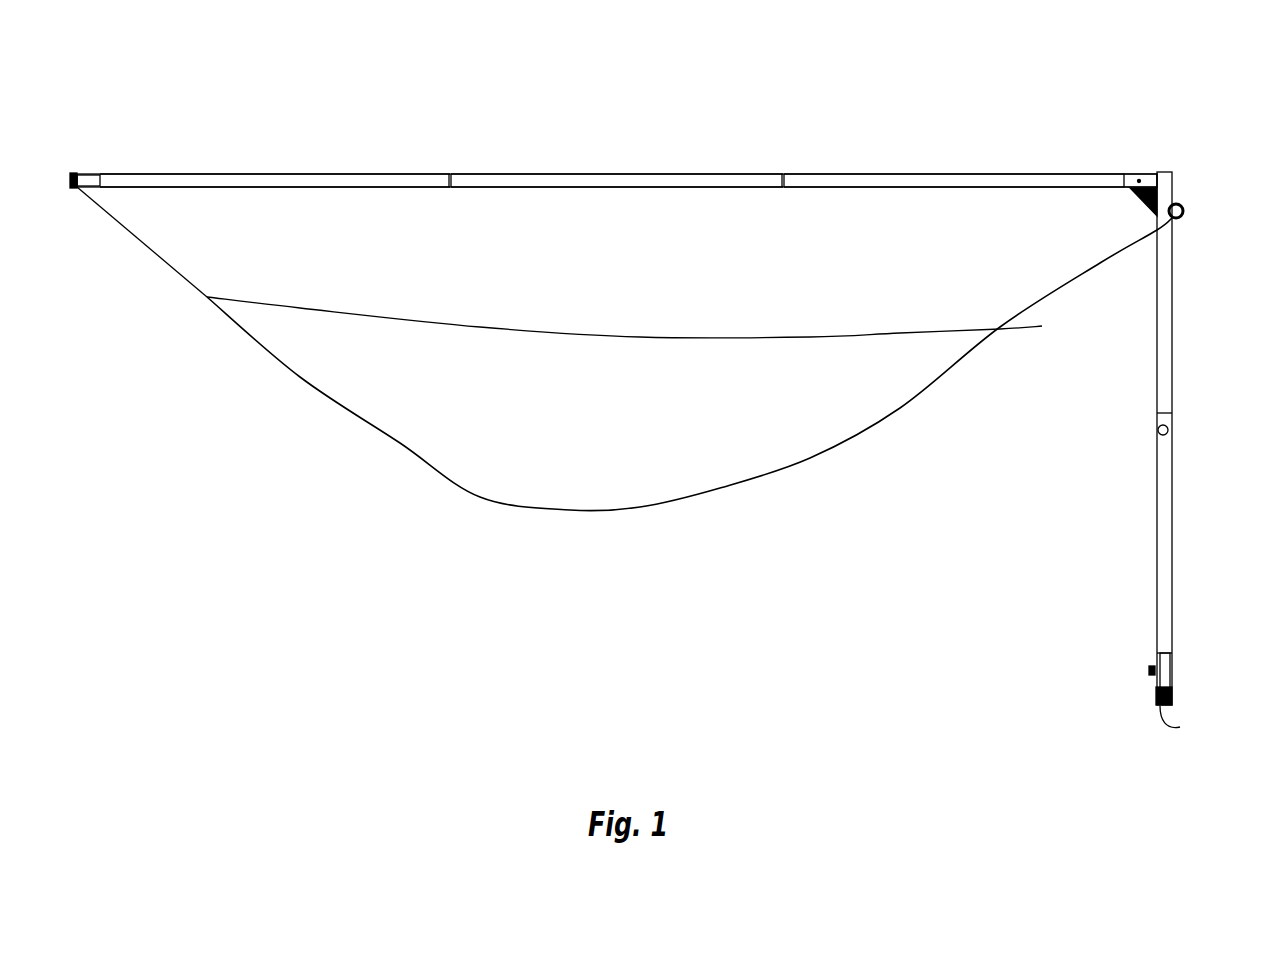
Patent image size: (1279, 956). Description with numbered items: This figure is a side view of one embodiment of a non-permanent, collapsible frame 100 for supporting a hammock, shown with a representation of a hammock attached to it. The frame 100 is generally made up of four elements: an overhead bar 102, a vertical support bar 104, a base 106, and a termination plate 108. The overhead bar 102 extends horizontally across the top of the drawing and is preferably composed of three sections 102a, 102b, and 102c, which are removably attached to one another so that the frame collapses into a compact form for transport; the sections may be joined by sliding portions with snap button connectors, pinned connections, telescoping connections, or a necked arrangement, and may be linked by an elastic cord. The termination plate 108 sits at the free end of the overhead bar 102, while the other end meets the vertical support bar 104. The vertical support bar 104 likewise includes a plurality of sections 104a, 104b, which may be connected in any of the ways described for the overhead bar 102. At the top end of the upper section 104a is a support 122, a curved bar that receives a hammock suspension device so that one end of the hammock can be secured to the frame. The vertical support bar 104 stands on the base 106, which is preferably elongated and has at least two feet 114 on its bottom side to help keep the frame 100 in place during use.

The non-permanent, collapsible frame 100 is at (1178, 102).
The overhead bar 102 is at (658, 174).
The first section of the overhead bar 102a is at (272, 174).
The second section of the overhead bar 102b is at (548, 174).
The third section of the overhead bar 102c is at (972, 174).
The vertical support bar 104 is at (1172, 362).
The first section of the vertical support bar 104a is at (1172, 306).
The second section of the vertical support bar 104b is at (1172, 522).
The base 106 is at (1173, 695).
The termination plate 108 is at (93, 174).
The feet 114 is at (1180, 727).
The support 122 is at (1183, 213).